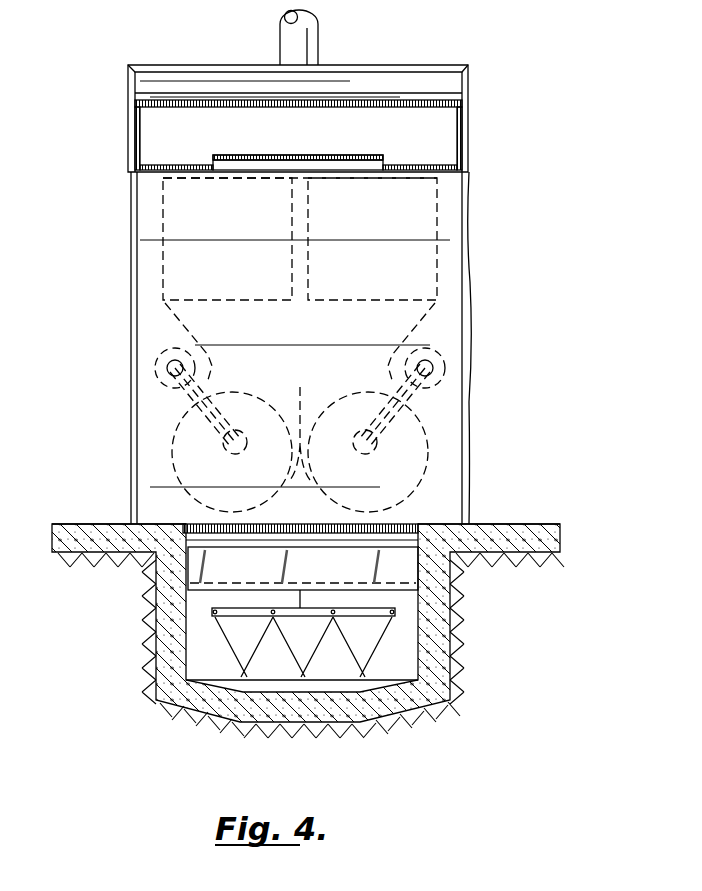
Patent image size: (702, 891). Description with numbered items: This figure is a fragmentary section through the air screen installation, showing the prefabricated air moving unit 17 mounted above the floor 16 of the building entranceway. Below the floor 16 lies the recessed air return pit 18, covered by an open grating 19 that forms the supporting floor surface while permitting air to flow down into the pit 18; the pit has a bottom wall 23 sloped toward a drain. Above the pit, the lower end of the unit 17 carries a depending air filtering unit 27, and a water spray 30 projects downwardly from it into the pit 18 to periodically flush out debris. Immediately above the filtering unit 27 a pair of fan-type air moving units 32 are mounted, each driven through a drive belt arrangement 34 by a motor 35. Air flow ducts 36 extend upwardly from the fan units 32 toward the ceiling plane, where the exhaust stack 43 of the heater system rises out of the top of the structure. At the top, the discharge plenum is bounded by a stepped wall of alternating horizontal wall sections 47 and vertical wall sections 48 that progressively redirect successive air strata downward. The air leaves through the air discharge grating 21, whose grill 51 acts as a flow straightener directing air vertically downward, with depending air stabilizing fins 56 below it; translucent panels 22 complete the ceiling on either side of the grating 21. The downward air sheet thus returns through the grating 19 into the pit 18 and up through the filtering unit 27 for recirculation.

The floor 16 is at (92, 524).
The air moving unit 17 is at (468, 242).
The pit 18 is at (408, 662).
The grating 19 is at (410, 526).
The air discharge grating 21 is at (357, 154).
The translucent panels 22 is at (171, 165).
The bottom wall 23 is at (243, 683).
The air filtering unit 27 is at (188, 572).
The water spray 30 is at (380, 599).
The air moving fan-type units 32 is at (172, 442).
The drive belt arrangement 34 is at (170, 400).
The motor 35 is at (156, 365).
The air flow ducts 36 is at (173, 322).
The exhaust stack 43 is at (286, 40).
The horizontal wall sections 47 is at (330, 107).
The vertical wall sections 48 is at (415, 103).
The grill 51 is at (266, 156).
The air stabilizing fins 56 is at (255, 172).